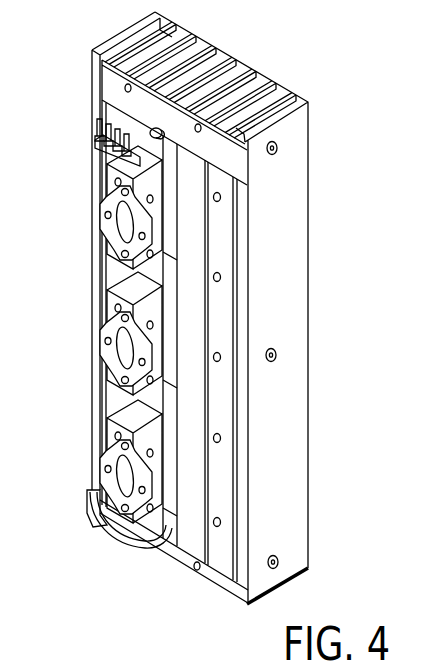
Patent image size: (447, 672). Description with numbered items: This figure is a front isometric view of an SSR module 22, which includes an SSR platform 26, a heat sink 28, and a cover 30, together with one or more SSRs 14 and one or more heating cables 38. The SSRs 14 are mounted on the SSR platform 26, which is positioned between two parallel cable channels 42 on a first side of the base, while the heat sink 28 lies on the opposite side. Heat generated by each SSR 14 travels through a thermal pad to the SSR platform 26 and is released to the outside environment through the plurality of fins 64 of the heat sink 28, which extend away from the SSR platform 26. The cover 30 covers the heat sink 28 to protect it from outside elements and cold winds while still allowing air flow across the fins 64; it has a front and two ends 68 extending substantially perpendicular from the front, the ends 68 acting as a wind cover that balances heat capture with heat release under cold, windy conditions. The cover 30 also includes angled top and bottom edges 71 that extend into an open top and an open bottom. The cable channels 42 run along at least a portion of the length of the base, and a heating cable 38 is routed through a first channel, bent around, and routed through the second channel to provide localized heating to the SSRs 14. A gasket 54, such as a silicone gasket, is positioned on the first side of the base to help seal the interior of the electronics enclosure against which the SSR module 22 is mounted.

The SSR module 22 is at (307, 55).
The SSR 14 is at (157, 260).
The SSR platform 26 is at (190, 164).
The heat sink 28 is at (250, 75).
The cover 30 is at (293, 98).
The heating cable 38 is at (135, 540).
The cable channel 42 is at (187, 323).
The gasket 54 is at (108, 78).
The fins 64 is at (228, 68).
The ends 68 is at (300, 538).
The angled top and bottom edges 71 is at (128, 28).